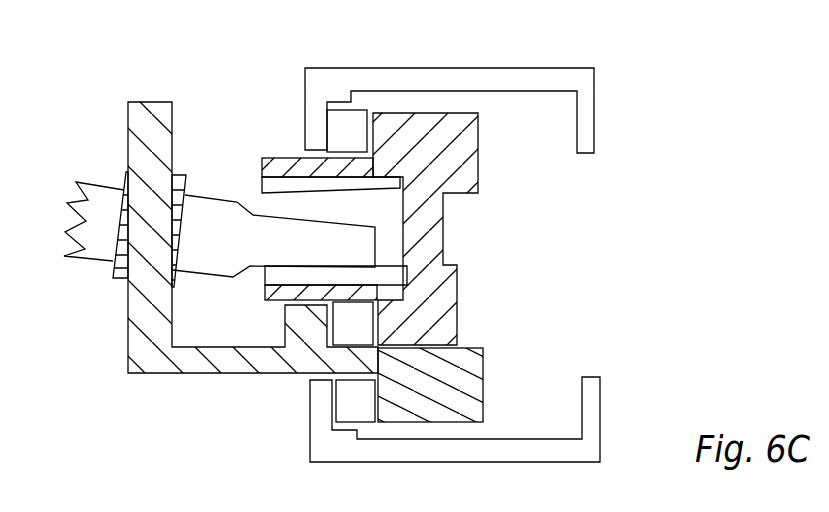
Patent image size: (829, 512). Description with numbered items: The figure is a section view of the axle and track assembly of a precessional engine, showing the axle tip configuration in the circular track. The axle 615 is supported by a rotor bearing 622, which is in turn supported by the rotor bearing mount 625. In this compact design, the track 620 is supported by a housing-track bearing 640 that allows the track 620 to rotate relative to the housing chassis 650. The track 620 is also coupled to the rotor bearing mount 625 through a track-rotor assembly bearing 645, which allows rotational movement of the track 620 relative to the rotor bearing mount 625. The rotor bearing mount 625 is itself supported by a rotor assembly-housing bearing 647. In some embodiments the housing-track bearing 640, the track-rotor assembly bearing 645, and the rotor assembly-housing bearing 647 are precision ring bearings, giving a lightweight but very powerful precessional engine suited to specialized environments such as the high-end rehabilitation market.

The axle 615 is at (220, 217).
The track 620 is at (473, 165).
The rotor bearing 622 is at (112, 282).
The rotor bearing mount 625 is at (133, 373).
The housing-track bearing 640 is at (347, 128).
The track-rotor assembly bearing 645 is at (352, 330).
The rotor assembly-housing bearing 647 is at (348, 408).
The housing chassis 650 is at (583, 143).